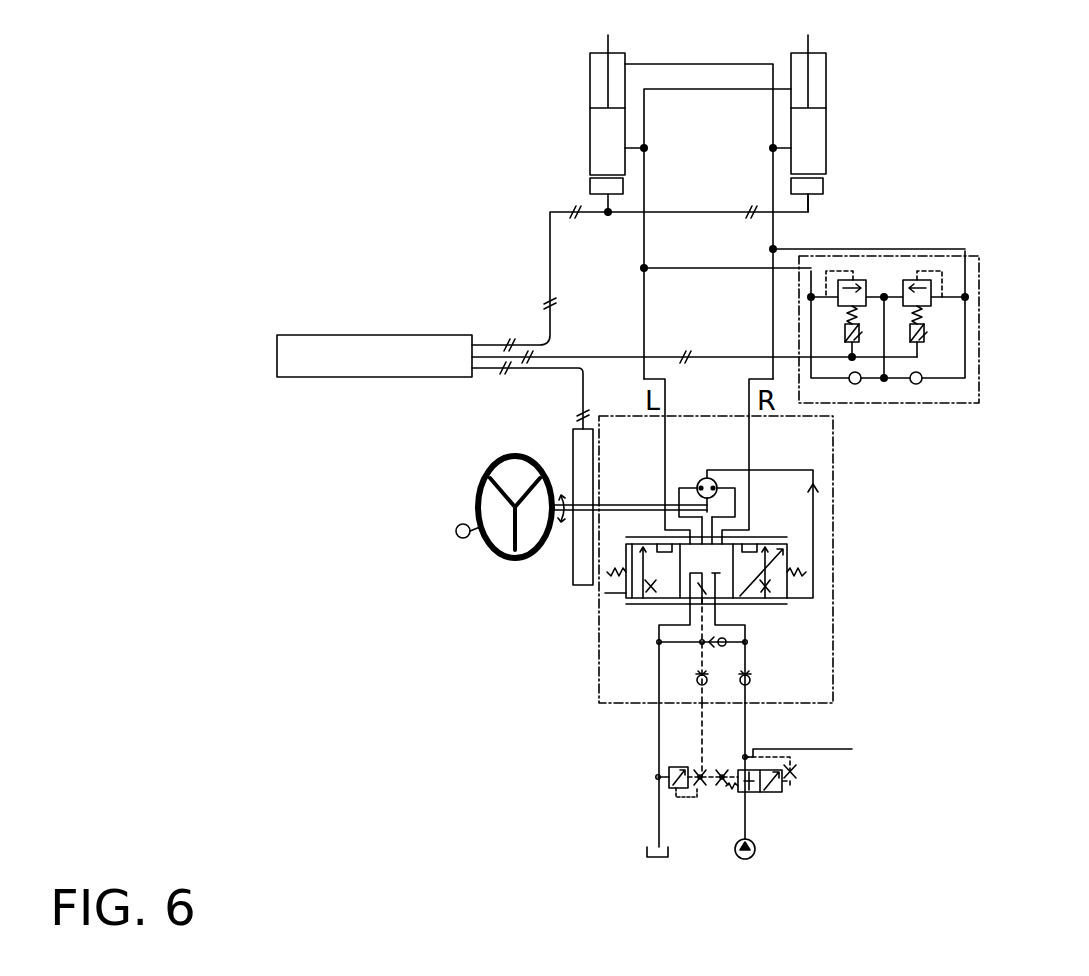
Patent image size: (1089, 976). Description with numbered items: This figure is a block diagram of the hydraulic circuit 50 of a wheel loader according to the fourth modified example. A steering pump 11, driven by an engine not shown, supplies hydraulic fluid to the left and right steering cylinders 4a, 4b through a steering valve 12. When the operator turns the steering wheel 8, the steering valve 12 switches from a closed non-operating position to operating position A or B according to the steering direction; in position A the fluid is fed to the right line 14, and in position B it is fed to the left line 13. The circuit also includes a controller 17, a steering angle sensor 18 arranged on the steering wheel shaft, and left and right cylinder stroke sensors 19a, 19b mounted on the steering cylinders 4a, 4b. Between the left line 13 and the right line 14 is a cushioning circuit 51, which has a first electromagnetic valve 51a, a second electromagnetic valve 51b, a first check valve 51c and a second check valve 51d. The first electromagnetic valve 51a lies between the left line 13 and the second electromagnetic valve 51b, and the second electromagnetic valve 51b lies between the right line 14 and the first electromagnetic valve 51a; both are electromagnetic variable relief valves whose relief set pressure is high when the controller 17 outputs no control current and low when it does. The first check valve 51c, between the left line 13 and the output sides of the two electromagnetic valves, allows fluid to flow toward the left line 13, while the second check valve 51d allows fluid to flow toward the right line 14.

The left steering cylinder 4a is at (588, 81).
The right steering cylinder 4b is at (828, 88).
The steering wheel 8 is at (477, 491).
The steering pump 11 is at (757, 850).
The steering valve 12 is at (808, 608).
The left line 13 is at (644, 268).
The right line 14 is at (773, 249).
The controller 17 is at (336, 334).
The steering angle sensor 18 is at (573, 572).
The left cylinder stroke sensor 19a is at (589, 185).
The right cylinder stroke sensor 19b is at (825, 186).
The hydraulic circuit 50 is at (1003, 118).
The cushioning circuit 51 is at (931, 335).
The first electromagnetic valve 51a is at (860, 278).
The second electromagnetic valve 51b is at (912, 279).
The first check valve 51c is at (858, 385).
The second check valve 51d is at (916, 385).